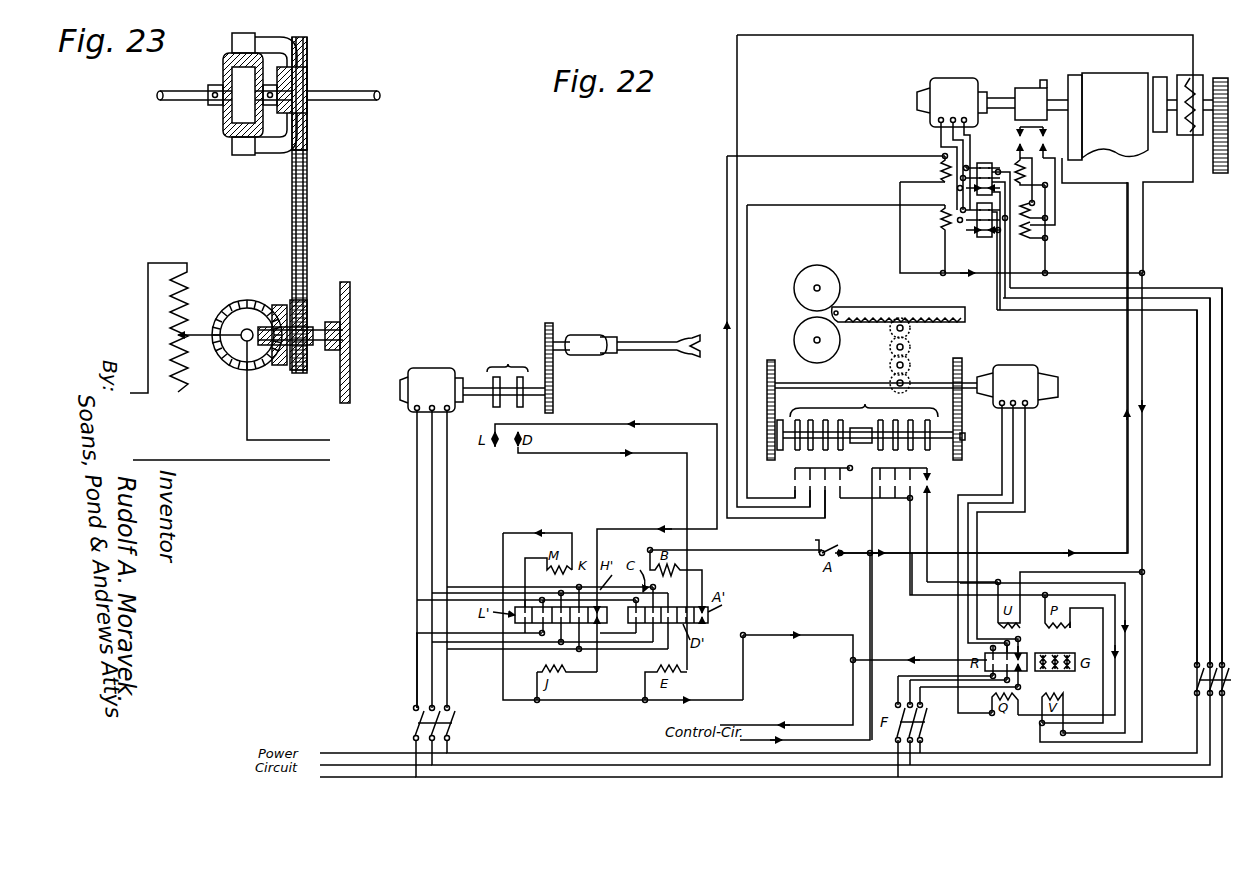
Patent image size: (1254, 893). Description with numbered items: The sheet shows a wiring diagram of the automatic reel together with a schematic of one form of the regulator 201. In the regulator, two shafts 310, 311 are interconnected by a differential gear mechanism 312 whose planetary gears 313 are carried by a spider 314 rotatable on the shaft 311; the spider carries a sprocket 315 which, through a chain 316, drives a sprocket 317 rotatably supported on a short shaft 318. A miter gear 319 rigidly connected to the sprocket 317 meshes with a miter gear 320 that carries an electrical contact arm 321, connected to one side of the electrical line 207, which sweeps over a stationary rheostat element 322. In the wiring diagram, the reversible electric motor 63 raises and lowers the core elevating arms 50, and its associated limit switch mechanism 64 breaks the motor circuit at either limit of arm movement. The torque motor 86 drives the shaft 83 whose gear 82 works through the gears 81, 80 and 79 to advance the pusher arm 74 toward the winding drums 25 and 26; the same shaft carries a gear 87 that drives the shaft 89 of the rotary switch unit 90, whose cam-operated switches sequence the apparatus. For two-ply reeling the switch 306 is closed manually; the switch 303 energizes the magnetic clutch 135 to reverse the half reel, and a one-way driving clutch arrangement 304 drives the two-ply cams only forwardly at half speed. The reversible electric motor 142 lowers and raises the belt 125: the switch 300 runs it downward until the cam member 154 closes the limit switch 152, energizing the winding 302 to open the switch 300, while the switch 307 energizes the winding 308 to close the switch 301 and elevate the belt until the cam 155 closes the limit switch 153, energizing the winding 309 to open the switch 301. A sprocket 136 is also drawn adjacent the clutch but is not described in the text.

In FIG. 23, the shaft 310 is at (170, 100).
In FIG. 23, the shaft 311 is at (358, 100).
In FIG. 23, the differential gear mechanism 312 is at (224, 118).
In FIG. 23, the planetary gears 313 is at (232, 50).
In FIG. 23, the spider 314 is at (272, 145).
In FIG. 23, the sprocket 315 is at (308, 140).
In FIG. 23, the chain 316 is at (308, 193).
In FIG. 23, the sprocket 317 is at (305, 310).
In FIG. 23, the short shaft 318 is at (344, 335).
In FIG. 23, the miter gear 319 is at (280, 305).
In FIG. 23, the miter gear 320 is at (256, 303).
In FIG. 23, the electrical contact arm 321 is at (205, 340).
In FIG. 23, the rheostat element 322 is at (180, 290).
In FIG. 23, the regulator 201 is at (348, 288).
In FIG. 23, the electrical line 207 is at (231, 402).
In FIG. 22, the winding drum 25 is at (817, 288).
In FIG. 22, the winding drum 26 is at (817, 340).
In FIG. 22, the core elevating arms 50 is at (655, 340).
In FIG. 22, the reversible electric motor 63 is at (534, 538).
In FIG. 22, the limit switch mechanism 64 is at (504, 377).
In FIG. 22, the pusher arm 74 is at (945, 306).
In FIG. 22, the gear 79 is at (911, 330).
In FIG. 22, the gear 80 is at (911, 346).
In FIG. 22, the gear 81 is at (890, 362).
In FIG. 22, the gear 82 is at (890, 382).
In FIG. 22, the motor-driven shaft 83 is at (962, 375).
In FIG. 22, the electric motor 86 is at (1008, 539).
In FIG. 22, the gear 87 is at (955, 368).
In FIG. 22, the shaft 89 is at (966, 437).
In FIG. 22, the rotary switch unit 90 is at (868, 420).
In FIG. 22, the belt 125 is at (1112, 116).
In FIG. 22, the magnetic clutch 135 is at (1190, 75).
In FIG. 22, the sprocket 136 is at (1222, 172).
In FIG. 22, the reversible electric motor 142 is at (952, 141).
In FIG. 22, the limit switch 152 is at (999, 119).
In FIG. 22, the limit switch 153 is at (1047, 127).
In FIG. 22, the cam member 154 is at (1012, 100).
In FIG. 22, the cam 155 is at (1043, 80).
In FIG. 22, the switch 300 is at (986, 162).
In FIG. 22, the switch 301 is at (984, 238).
In FIG. 22, the winding 302 is at (1027, 172).
In FIG. 22, the switch 303 is at (808, 463).
In FIG. 22, the one-way driving clutch arrangement 304 is at (780, 420).
In FIG. 22, the switch 306 is at (872, 450).
In FIG. 22, the switch 307 is at (795, 484).
In FIG. 22, the winding 308 is at (928, 214).
In FIG. 22, the winding 309 is at (1025, 238).